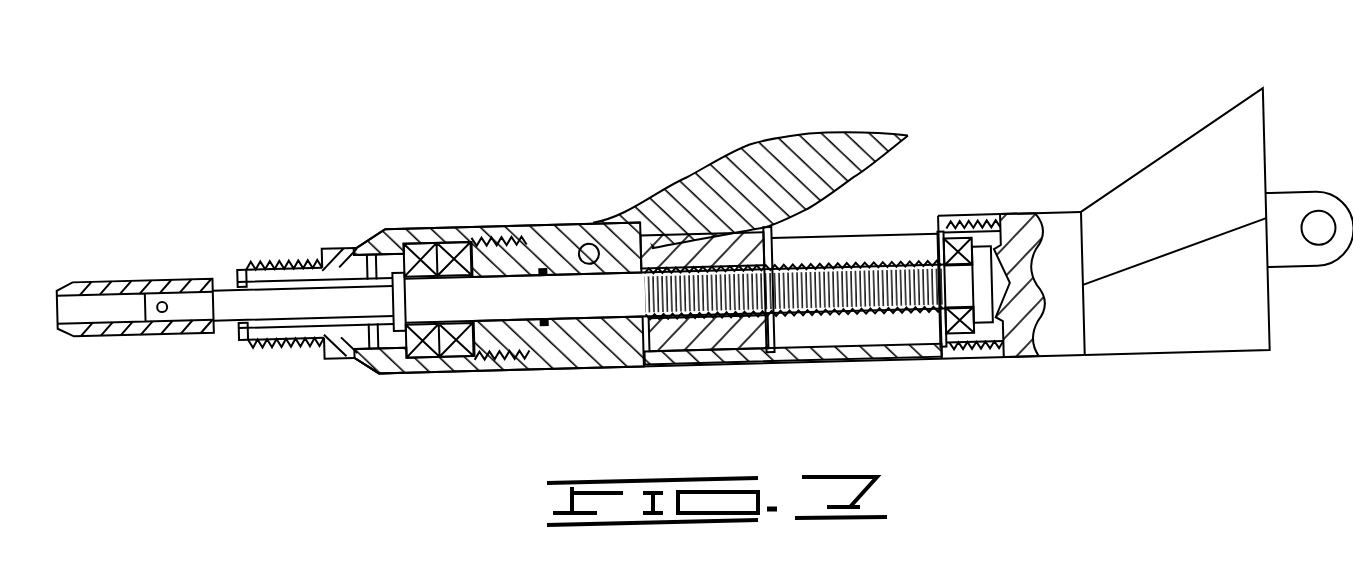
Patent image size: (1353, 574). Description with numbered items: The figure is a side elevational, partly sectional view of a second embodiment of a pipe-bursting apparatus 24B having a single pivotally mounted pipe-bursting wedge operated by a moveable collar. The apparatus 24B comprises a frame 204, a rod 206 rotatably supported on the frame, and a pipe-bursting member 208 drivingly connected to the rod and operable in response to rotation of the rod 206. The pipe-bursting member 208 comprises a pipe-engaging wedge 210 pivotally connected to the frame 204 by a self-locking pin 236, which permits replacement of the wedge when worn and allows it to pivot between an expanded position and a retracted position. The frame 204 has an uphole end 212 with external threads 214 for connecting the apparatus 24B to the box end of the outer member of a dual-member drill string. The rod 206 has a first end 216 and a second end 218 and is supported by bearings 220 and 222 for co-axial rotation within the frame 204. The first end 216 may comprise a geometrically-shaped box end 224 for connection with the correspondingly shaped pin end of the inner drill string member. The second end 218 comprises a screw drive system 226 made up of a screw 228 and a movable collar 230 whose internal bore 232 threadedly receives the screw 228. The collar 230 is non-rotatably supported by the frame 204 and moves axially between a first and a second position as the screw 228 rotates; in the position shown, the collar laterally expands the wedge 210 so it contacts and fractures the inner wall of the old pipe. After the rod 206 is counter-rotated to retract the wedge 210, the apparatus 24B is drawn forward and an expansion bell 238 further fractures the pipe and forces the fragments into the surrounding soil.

The pipe-bursting apparatus 24B is at (578, 115).
The frame 204 is at (540, 228).
The rod 206 is at (378, 245).
The pipe-bursting member 208 is at (752, 147).
The pipe-engaging wedge 210 is at (865, 135).
The uphole end 212 is at (395, 372).
The external threads 214 is at (308, 350).
The first end 216 is at (228, 280).
The second end 218 is at (897, 263).
The bearing 220 is at (420, 352).
The bearing 222 is at (945, 330).
The box end 224 is at (172, 335).
The screw drive system 226 is at (668, 362).
The screw 228 is at (832, 267).
The movable collar 230 is at (712, 353).
The internal bore 232 is at (772, 325).
The self-locking pin 236 is at (592, 240).
The expansion bell 238 is at (1172, 148).